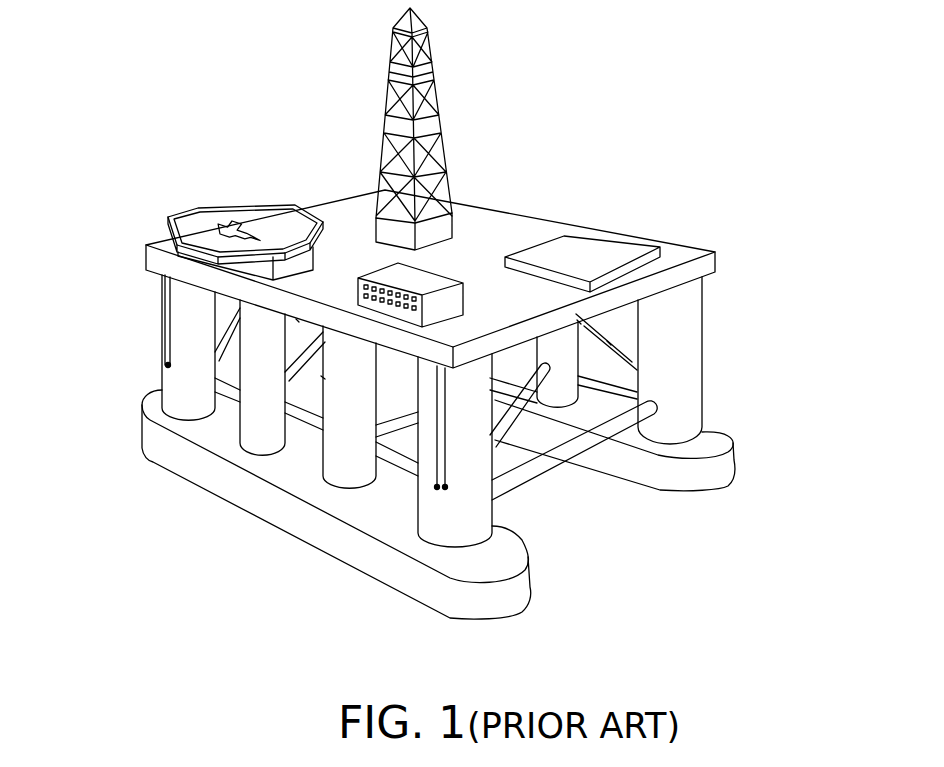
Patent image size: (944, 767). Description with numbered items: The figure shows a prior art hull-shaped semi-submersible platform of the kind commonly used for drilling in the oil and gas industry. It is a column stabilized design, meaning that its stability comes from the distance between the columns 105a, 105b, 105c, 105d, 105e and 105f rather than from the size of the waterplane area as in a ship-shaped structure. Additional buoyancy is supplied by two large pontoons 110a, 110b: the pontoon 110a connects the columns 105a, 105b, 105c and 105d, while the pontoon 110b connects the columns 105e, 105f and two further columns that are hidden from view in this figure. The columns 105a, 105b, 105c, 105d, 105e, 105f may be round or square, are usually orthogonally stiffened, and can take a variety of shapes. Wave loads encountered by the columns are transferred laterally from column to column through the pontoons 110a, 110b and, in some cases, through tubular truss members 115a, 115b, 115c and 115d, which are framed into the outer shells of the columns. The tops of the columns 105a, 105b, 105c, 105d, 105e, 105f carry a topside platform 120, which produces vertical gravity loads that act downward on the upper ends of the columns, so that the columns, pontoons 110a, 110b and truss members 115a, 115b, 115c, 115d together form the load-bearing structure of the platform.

The topside platform 120 is at (717, 262).
The column 105a is at (440, 520).
The column 105b is at (350, 475).
The column 105c is at (257, 438).
The column 105d is at (183, 402).
The column 105e is at (567, 388).
The column 105f is at (680, 385).
The pontoon 110a is at (522, 620).
The pontoon 110b is at (735, 486).
The tubular truss member 115a is at (648, 402).
The tubular truss member 115b is at (427, 378).
The tubular truss member 115c is at (323, 378).
The tubular truss member 115d is at (227, 372).